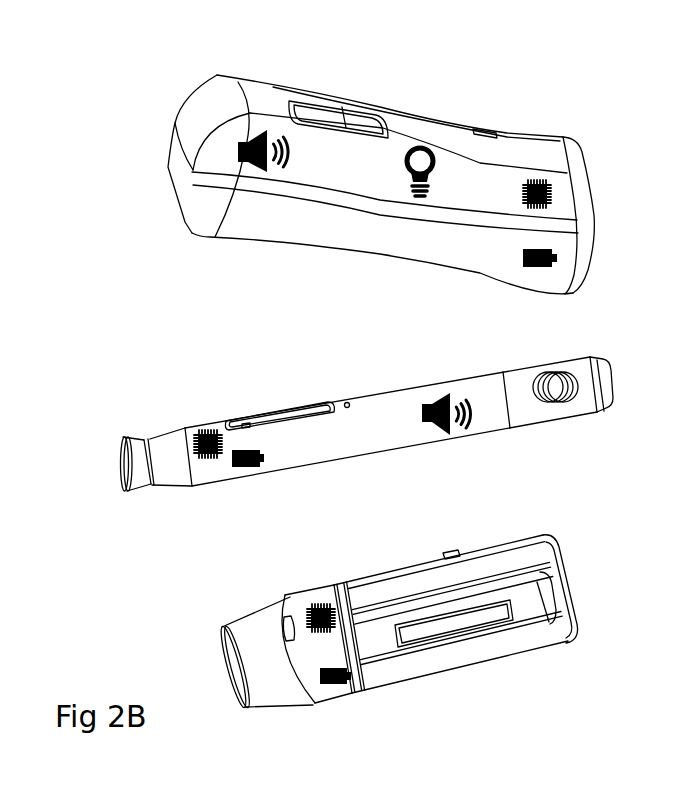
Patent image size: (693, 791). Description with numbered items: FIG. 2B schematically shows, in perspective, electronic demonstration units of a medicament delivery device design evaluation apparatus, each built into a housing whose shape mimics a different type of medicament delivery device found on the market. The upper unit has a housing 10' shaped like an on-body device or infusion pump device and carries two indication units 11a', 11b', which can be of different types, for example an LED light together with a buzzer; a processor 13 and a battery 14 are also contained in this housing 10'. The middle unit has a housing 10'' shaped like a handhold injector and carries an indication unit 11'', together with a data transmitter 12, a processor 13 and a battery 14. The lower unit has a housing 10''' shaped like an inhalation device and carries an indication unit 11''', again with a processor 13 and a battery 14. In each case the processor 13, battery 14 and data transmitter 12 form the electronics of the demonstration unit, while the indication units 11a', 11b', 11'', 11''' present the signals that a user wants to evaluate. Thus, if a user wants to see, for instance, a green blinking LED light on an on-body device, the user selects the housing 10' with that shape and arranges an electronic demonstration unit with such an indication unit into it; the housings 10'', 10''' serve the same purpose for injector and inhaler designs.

The housing 10' is at (343, 177).
The indication unit 11a' is at (400, 118).
The indication unit 11b' is at (308, 213).
The processor 13 is at (552, 188).
The battery 14 is at (557, 257).
The housing 10'' is at (344, 424).
The indication unit 11'' is at (514, 438).
The data transmitter 12 is at (577, 398).
The housing 10''' is at (397, 622).
The indication unit 11''' is at (528, 641).